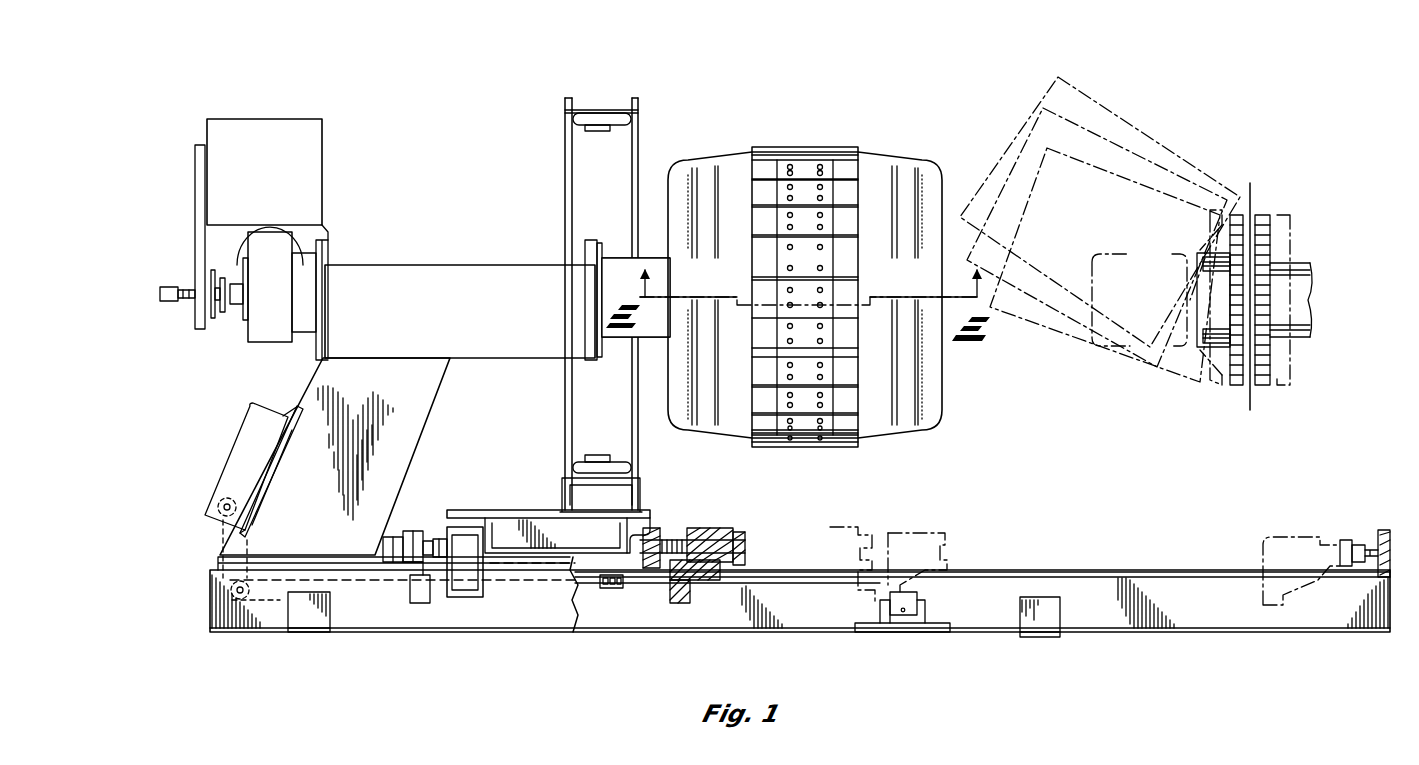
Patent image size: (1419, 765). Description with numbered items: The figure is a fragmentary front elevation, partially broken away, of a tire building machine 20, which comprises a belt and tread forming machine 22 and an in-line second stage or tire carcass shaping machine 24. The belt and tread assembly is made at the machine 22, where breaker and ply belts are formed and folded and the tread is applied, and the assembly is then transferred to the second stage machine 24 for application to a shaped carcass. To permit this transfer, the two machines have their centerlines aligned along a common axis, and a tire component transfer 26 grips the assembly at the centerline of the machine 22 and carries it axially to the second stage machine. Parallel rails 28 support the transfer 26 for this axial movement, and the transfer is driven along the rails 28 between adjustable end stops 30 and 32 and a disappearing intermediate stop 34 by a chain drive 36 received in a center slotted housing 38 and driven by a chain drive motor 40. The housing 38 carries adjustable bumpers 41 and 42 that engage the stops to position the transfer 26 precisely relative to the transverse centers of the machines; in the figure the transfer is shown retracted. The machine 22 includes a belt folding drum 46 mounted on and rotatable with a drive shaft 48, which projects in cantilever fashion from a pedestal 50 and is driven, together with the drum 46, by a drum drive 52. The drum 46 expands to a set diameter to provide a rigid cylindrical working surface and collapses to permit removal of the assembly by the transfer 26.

The tire building machine 20 is at (368, 108).
The belt and tread forming machine 22 is at (234, 385).
The second stage machine 24 is at (1283, 208).
The tire component transfer 26 is at (600, 104).
The rails 28 is at (527, 583).
The adjustable end stop 30 is at (414, 531).
The adjustable end stop 32 is at (1380, 528).
The disappearing intermediate stop 34 is at (900, 618).
The chain drive 36 is at (340, 585).
The center slotted housing 38 is at (478, 510).
The chain drive motor 40 is at (220, 488).
The adjustable bumper 41 is at (442, 574).
The adjustable bumper 42 is at (705, 528).
The belt folding drum 46 is at (806, 146).
The drive shaft 48 is at (237, 318).
The pedestal 50 is at (453, 265).
The drum drive 52 is at (325, 142).